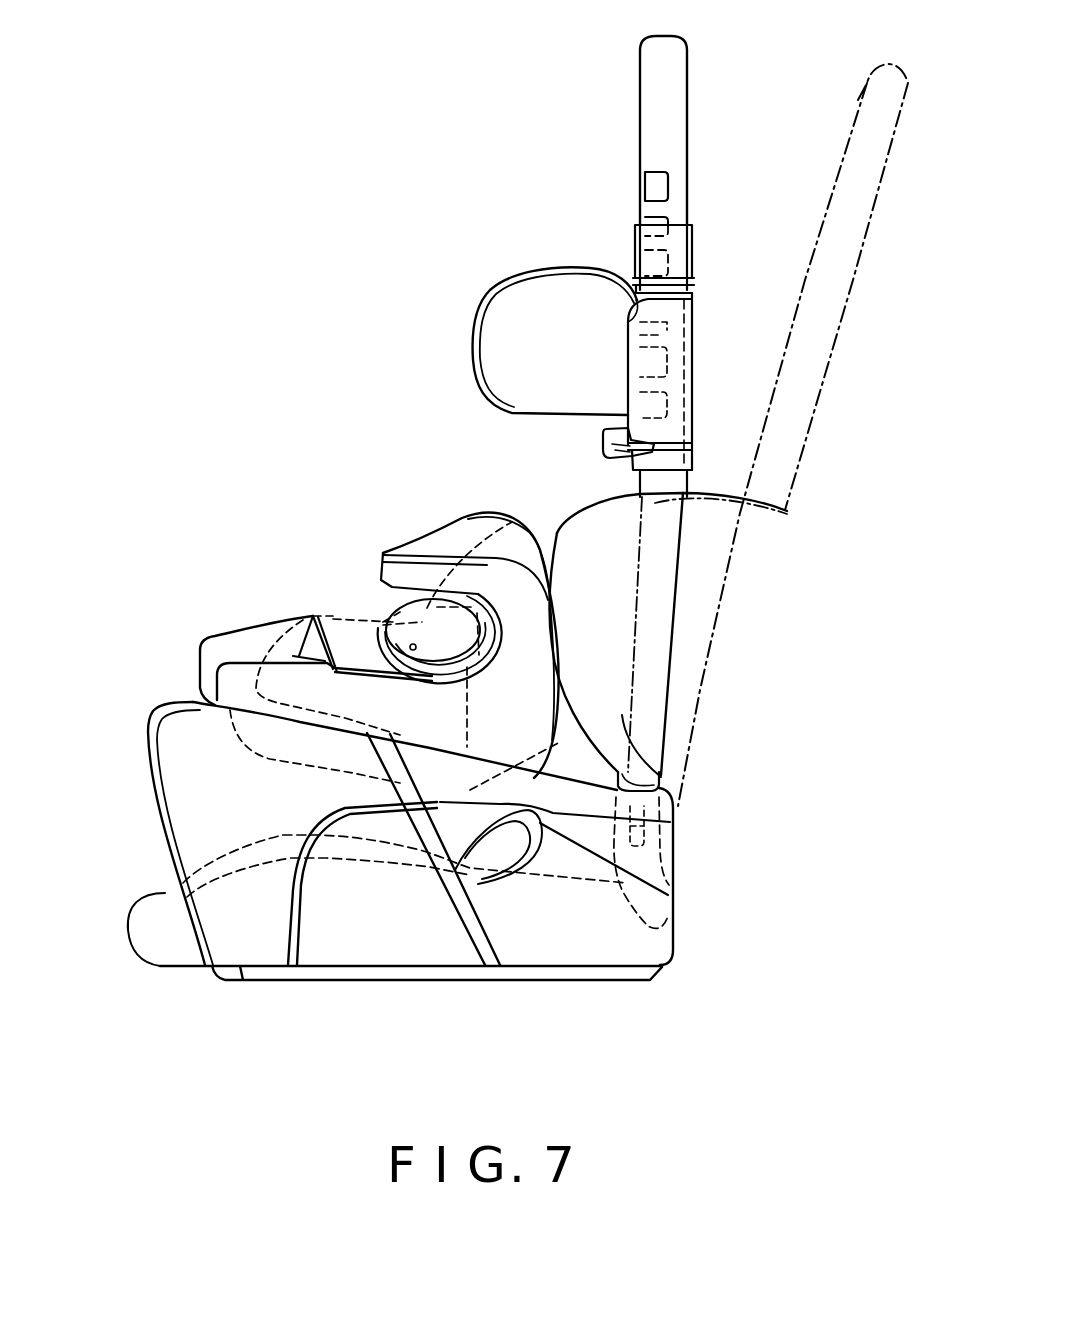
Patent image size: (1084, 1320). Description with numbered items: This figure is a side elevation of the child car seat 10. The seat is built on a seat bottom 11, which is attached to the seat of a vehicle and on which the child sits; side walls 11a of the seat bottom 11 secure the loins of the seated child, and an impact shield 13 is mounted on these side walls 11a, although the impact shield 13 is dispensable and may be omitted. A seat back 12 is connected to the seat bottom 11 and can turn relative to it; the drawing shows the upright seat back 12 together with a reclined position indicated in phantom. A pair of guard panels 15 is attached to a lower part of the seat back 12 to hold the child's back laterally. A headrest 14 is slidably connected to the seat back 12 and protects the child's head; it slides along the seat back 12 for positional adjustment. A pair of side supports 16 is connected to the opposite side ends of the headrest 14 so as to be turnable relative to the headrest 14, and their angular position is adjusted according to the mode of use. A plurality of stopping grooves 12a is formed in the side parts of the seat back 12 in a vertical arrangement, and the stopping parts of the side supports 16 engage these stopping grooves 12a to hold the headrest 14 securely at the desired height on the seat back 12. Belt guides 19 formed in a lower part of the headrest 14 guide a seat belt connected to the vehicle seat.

The child car seat 10 is at (806, 731).
The seat bottom 11 is at (584, 948).
The side walls 11a is at (158, 752).
The seat back 12 is at (655, 88).
The stopping grooves 12a is at (543, 175).
The impact shield 13 is at (383, 552).
The headrest 14 is at (674, 337).
The guard panels 15 is at (594, 527).
The side supports 16 is at (493, 337).
The belt guides 19 is at (587, 446).